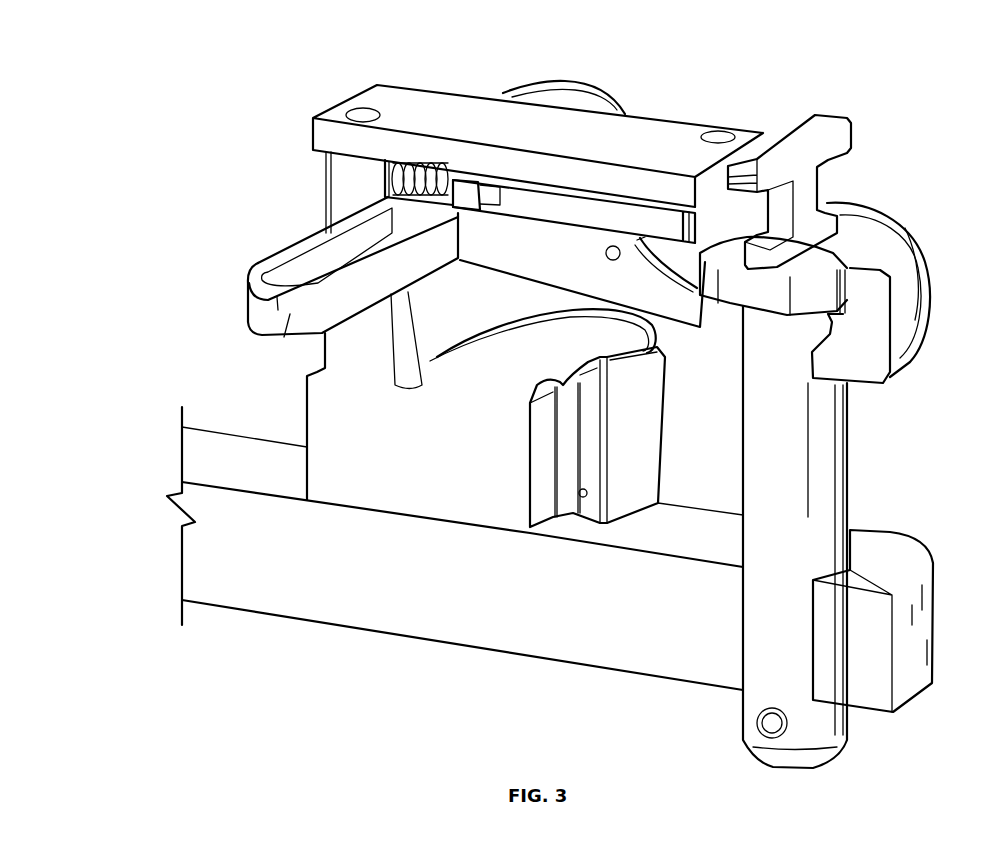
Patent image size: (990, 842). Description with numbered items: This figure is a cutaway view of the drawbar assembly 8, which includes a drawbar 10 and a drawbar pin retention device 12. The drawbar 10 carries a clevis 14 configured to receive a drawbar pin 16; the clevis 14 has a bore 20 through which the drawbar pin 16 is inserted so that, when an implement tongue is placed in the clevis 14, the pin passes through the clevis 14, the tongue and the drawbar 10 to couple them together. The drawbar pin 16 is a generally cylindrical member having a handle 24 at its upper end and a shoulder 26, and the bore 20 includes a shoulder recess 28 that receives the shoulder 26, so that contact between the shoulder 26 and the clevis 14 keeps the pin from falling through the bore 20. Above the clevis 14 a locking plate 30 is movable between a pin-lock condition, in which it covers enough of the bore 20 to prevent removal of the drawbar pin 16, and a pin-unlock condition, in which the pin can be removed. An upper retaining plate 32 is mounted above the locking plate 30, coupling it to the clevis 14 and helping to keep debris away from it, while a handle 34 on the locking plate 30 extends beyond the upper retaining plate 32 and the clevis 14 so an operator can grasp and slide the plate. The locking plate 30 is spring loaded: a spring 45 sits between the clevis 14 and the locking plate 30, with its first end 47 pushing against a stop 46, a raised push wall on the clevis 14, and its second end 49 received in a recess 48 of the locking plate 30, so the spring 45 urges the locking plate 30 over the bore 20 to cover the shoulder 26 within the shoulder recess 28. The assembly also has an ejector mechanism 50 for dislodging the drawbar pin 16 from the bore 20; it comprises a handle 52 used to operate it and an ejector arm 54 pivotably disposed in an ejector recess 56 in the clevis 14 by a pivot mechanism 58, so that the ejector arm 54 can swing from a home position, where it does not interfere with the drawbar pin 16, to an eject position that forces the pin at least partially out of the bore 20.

The drawbar assembly 8 is at (255, 690).
The drawbar 10 is at (630, 670).
The drawbar pin retention device 12 is at (312, 50).
The clevis 14 is at (917, 332).
The drawbar pin 16 is at (823, 473).
The bore 20 is at (843, 253).
The handle 24 is at (833, 113).
The shoulder 26 is at (765, 296).
The shoulder recess 28 is at (848, 292).
The locking plate 30 is at (561, 216).
The upper retaining plate 32 is at (636, 151).
The handle 34 is at (567, 97).
The spring 45 is at (418, 163).
The stop 46 is at (383, 188).
The first end 47 is at (388, 163).
The recess 48 is at (487, 190).
The second end 49 is at (463, 187).
The ejector mechanism 50 is at (278, 220).
The handle 52 is at (290, 313).
The ejector arm 54 is at (526, 259).
The ejector recess 56 is at (468, 309).
The pivot mechanism 58 is at (612, 262).